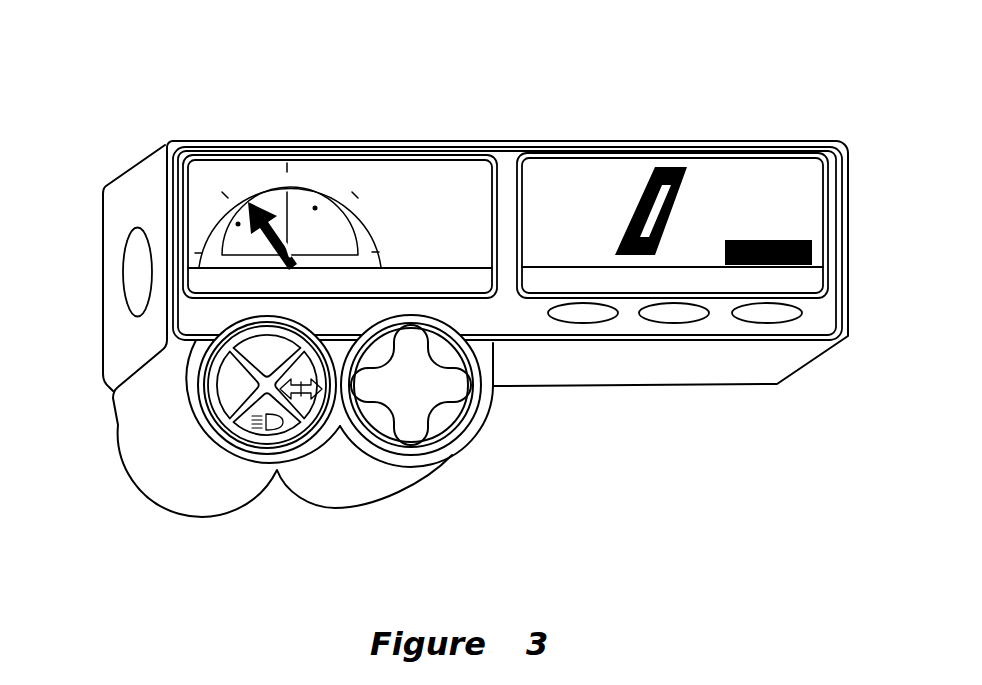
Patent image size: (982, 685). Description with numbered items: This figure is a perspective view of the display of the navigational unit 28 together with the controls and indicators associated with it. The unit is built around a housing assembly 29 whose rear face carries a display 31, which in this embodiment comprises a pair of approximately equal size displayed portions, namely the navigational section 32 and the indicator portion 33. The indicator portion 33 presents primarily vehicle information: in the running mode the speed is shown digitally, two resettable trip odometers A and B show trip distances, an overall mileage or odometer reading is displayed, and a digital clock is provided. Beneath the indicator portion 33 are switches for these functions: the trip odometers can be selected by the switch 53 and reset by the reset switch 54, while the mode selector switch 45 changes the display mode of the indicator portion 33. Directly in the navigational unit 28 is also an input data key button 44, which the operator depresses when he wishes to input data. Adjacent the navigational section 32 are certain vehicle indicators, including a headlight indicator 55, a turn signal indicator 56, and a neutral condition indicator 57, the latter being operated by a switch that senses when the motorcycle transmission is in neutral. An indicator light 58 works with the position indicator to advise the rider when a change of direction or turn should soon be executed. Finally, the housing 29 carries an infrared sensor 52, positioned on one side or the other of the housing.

The navigational unit 28 is at (433, 87).
The housing assembly 29 is at (136, 178).
The display 31 is at (638, 60).
The navigational section 32 is at (477, 173).
The indicator portion 33 is at (560, 170).
The input data key button 44 is at (430, 398).
The mode selector switch 45 is at (767, 318).
The infrared sensor 52 is at (133, 283).
The trip odometer selector switch 53 is at (673, 318).
The reset switch 54 is at (578, 318).
The headlight indicator 55 is at (260, 437).
The turn signal indicator 56 is at (328, 443).
The neutral condition indicator 57 is at (217, 413).
The indicator light 58 is at (200, 372).